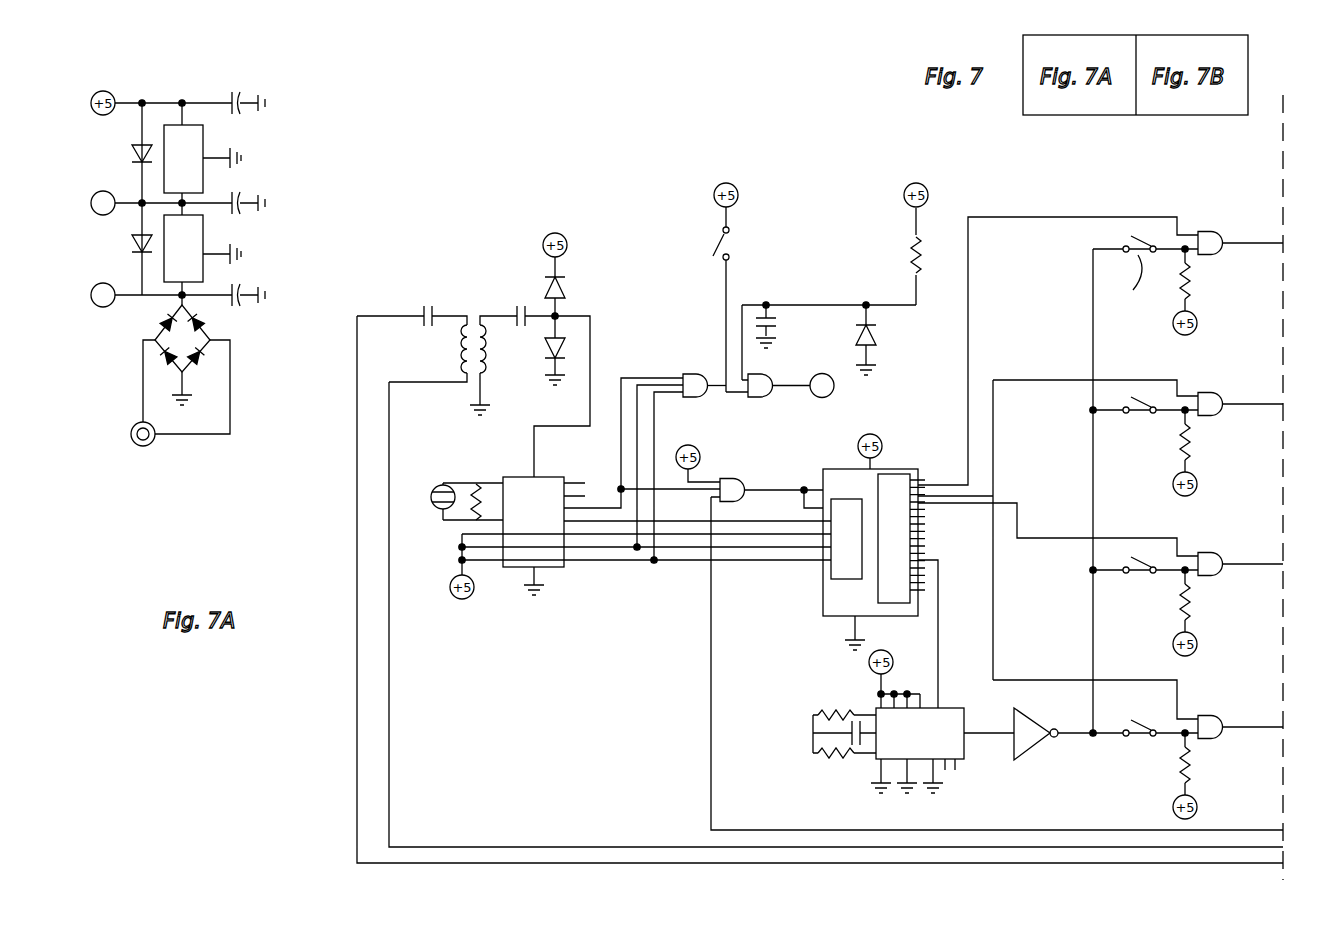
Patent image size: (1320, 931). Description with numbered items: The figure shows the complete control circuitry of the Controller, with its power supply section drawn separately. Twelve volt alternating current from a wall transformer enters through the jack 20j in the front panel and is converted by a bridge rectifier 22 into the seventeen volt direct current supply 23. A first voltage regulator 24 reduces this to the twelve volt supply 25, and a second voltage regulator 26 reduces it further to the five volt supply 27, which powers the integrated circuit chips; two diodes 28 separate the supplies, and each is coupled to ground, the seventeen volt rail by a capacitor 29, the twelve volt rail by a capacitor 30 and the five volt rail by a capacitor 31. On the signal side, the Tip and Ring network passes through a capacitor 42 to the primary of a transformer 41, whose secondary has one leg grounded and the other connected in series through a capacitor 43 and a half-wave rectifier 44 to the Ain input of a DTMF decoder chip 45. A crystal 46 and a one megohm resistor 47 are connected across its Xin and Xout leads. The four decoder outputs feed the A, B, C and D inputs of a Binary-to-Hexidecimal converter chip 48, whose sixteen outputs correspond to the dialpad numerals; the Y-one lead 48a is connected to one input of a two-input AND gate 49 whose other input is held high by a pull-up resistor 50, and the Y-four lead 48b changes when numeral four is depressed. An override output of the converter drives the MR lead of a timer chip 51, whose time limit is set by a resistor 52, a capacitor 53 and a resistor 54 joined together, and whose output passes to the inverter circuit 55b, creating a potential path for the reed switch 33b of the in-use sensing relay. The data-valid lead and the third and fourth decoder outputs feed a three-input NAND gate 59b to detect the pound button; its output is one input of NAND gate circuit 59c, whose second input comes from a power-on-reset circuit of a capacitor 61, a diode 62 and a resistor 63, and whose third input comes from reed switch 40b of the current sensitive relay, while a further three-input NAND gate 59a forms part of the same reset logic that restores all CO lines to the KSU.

In FIG. 7A, the jack 20j is at (135, 445).
In FIG. 7A, the bridge rectifier 22 is at (160, 345).
In FIG. 7A, the +17 VDC 23 is at (95, 288).
In FIG. 7A, the 7812 voltage regulator 24 is at (188, 256).
In FIG. 7A, the +12 VDC 25 is at (95, 195).
In FIG. 7A, the 7805 voltage regulator 26 is at (192, 157).
In FIG. 7A, the +5 VDC 27 is at (95, 95).
In FIG. 7, the +5 VDC 27 is at (553, 232).
In FIG. 7A, the 1N4148 diodes 28 is at (132, 152).
In FIG. 7A, the 1000 ufd, 20 volt capacitor 29 is at (240, 284).
In FIG. 7A, the 100 ufd, 16 volt capacitor 30 is at (240, 192).
In FIG. 7A, the 10 ufd, 10 volt capacitor 31 is at (240, 92).
In FIG. 7, the reed switch 33b is at (1125, 294).
In FIG. 7, the reed switch 40b is at (718, 240).
In FIG. 7, the transformer 41 is at (475, 385).
In FIG. 7, the 0.33 ufd capacitor 42 is at (428, 305).
In FIG. 7, the 0.01 ufd capacitor 43 is at (520, 305).
In FIG. 7, the half-wave rectifier 44 is at (565, 290).
In FIG. 7, the DTMF decoder chip 45 is at (550, 567).
In FIG. 7, the 3.5967 MHz crystal 46 is at (445, 512).
In FIG. 7, the 1 megohm resistor 47 is at (470, 492).
In FIG. 7, the Binary-to-Hexidecimal converter chip 48 is at (828, 605).
In FIG. 7, the Y-1 lead 48a is at (962, 482).
In FIG. 7, the Y-4 lead 48b is at (936, 562).
In FIG. 7, the two-input AND gate 49 is at (1208, 232).
In FIG. 7, the 100K pull-up resistor 50 is at (1193, 285).
In FIG. 7, the timer chip 51 is at (945, 716).
In FIG. 7, the 3.3K resistor 52 is at (830, 712).
In FIG. 7, the 0.01 ufd capacitor 53 is at (856, 760).
In FIG. 7, the 6.8K resistor 54 is at (828, 758).
In FIG. 7, the inverter chip circuit 55b is at (1018, 755).
In FIG. 7, the 3-input NAND gate 59a is at (735, 478).
In FIG. 7, the 3-input NAND gate 59b is at (692, 374).
In FIG. 7, the 3-input NAND gate circuit 59c is at (763, 374).
In FIG. 7, the 0.33 ufd capacitor 61 is at (775, 305).
In FIG. 7, the 1N4148 diode 62 is at (878, 334).
In FIG. 7, the 47K resistor 63 is at (910, 250).